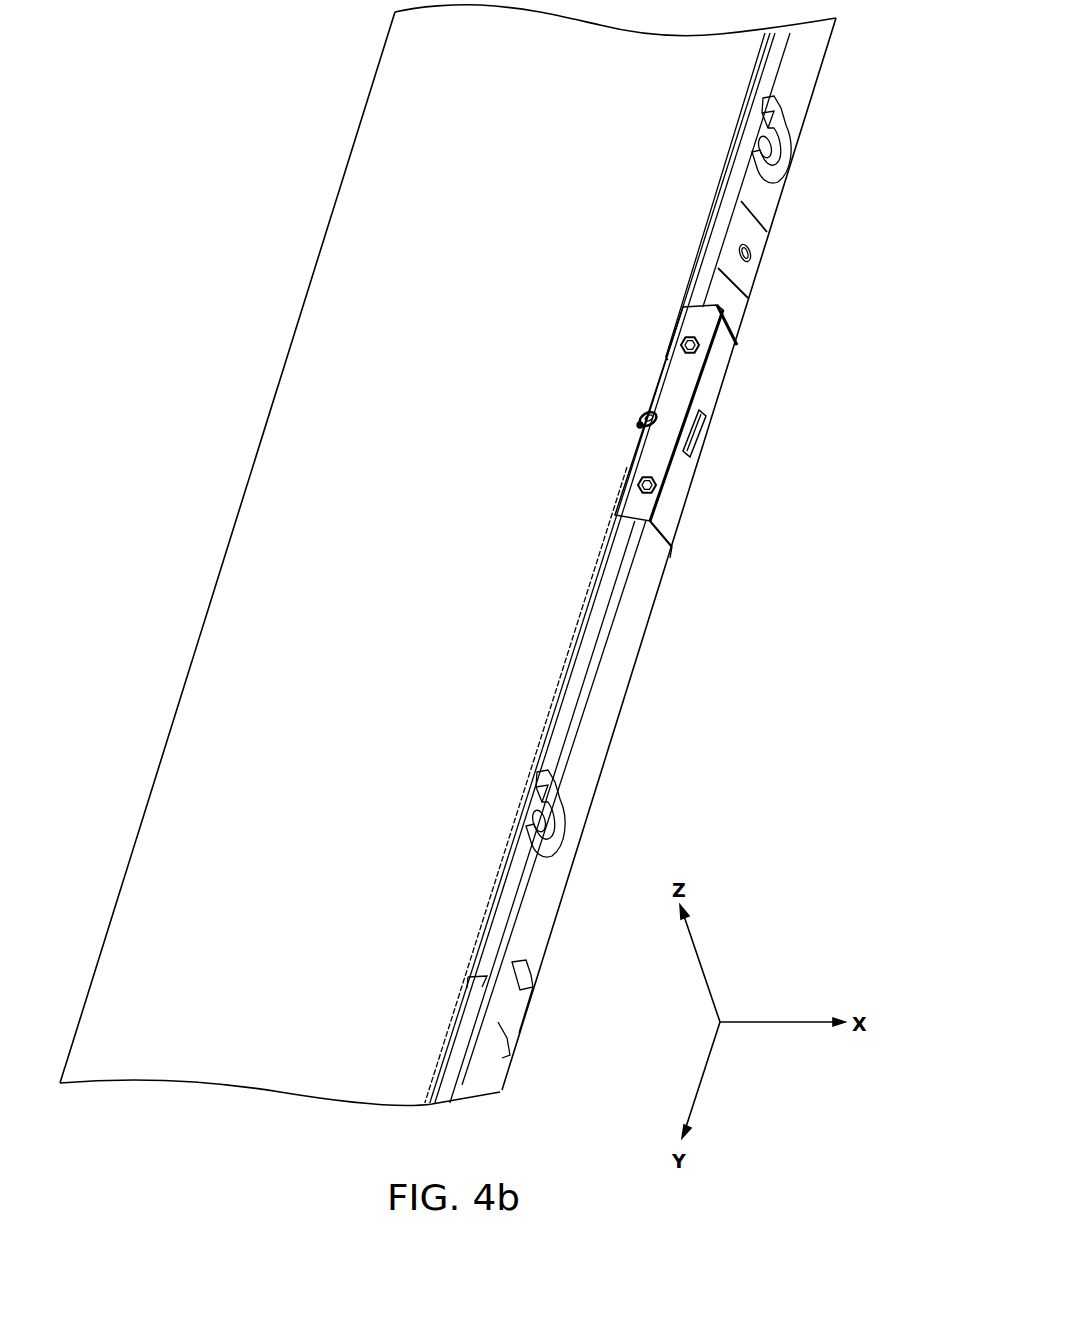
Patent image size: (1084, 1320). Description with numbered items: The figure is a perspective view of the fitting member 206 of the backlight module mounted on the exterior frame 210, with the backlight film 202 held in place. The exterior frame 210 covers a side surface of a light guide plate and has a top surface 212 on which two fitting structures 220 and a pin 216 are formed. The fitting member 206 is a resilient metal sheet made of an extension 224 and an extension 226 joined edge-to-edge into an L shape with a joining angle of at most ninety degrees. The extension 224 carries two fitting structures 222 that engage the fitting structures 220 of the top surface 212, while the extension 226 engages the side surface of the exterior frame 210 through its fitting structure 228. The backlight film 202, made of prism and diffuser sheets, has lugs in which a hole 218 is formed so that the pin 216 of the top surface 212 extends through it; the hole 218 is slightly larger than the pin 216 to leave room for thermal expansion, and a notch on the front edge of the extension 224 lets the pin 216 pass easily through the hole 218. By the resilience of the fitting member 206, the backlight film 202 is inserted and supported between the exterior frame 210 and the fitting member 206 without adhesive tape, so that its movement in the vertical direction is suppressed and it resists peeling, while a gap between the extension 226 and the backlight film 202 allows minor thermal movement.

The backlight film 202 is at (272, 442).
The fitting member 206 is at (750, 400).
The exterior frame 210 is at (730, 308).
The top surface 212 is at (684, 308).
The pin 216 is at (636, 424).
The hole 218 is at (640, 410).
The fitting structure 220 is at (680, 330).
The fitting structure 222 is at (722, 346).
The extension 224 is at (672, 382).
The extension 226 is at (707, 422).
The fitting structure 228 is at (694, 452).